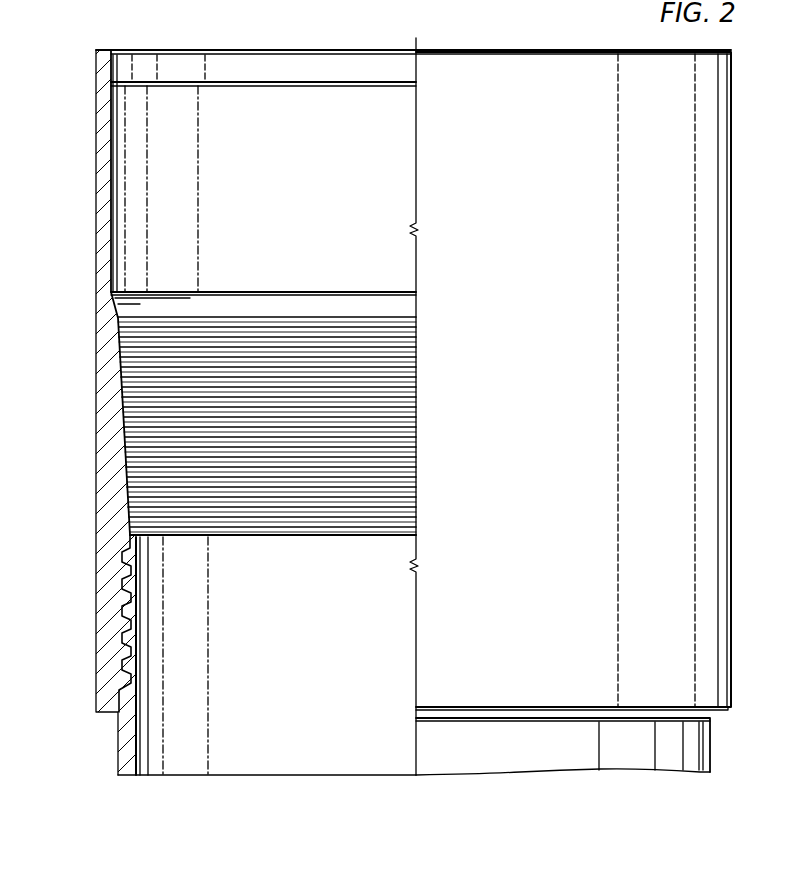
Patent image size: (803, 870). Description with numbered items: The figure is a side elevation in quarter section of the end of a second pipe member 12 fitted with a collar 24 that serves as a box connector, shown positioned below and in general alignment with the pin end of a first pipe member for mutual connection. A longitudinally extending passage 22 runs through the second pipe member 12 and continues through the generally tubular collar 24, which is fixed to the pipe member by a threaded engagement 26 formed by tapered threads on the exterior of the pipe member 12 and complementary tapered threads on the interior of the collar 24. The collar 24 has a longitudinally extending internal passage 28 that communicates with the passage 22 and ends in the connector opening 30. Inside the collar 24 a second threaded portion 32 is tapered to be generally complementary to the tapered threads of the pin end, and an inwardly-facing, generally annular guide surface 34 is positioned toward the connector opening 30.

The second pipe member 12 is at (94, 744).
The longitudinally extending passage 22 is at (138, 645).
The collar 24 is at (712, 338).
The threaded engagement 26 is at (127, 580).
The internal passage 28 is at (123, 240).
The connector opening 30 is at (112, 48).
The second threaded portion 32 is at (155, 425).
The guide surface 34 is at (243, 60).